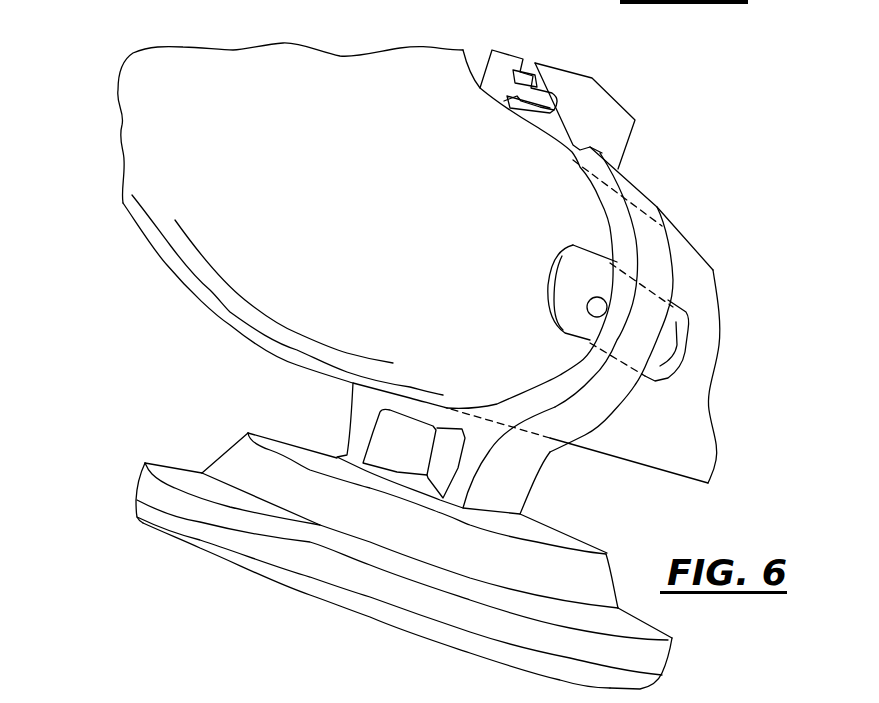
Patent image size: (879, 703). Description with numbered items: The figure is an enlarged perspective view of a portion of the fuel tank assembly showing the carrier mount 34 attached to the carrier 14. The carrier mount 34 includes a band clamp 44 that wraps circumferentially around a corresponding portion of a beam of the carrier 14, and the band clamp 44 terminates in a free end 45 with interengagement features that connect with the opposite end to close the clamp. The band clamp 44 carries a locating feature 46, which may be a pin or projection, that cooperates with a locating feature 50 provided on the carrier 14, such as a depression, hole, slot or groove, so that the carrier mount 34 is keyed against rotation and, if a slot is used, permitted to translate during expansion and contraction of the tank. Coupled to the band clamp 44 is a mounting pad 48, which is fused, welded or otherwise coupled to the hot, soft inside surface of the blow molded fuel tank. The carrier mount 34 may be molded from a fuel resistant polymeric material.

The carrier 14 is at (165, 268).
The carrier mount 34 is at (568, 483).
The band clamp 44 is at (683, 212).
The free end 45 is at (502, 60).
The locating feature 46 is at (597, 297).
The mounting pad 48 is at (137, 518).
The locating feature 50 is at (566, 308).